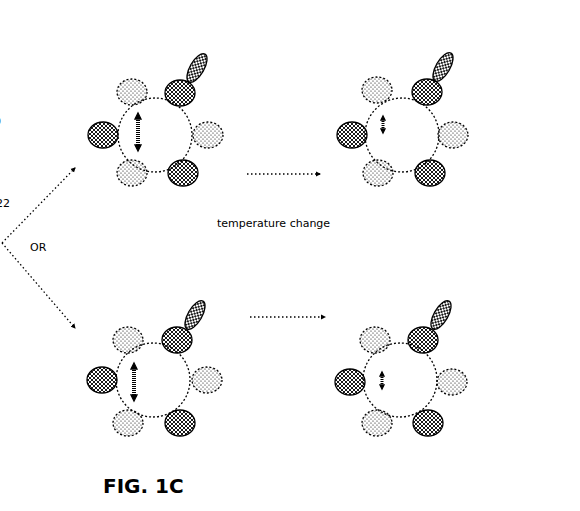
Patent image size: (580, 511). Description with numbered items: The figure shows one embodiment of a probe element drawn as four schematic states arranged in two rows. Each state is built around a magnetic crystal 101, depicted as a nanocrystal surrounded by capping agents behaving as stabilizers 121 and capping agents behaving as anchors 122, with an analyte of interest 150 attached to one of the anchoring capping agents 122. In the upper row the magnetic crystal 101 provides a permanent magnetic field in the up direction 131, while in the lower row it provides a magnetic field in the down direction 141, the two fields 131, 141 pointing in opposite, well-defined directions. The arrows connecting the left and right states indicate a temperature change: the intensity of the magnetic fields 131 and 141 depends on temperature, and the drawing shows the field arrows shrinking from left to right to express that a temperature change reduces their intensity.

The magnetic crystal 101 is at (277, 257).
The capping agents behaving as stabilizers 121 is at (124, 76).
The capping agents behaving as anchors 122 is at (199, 96).
The magnetic field in the up direction 131 is at (274, 132).
The magnetic field in the down direction 141 is at (271, 382).
The analyte of interest 150 is at (203, 47).